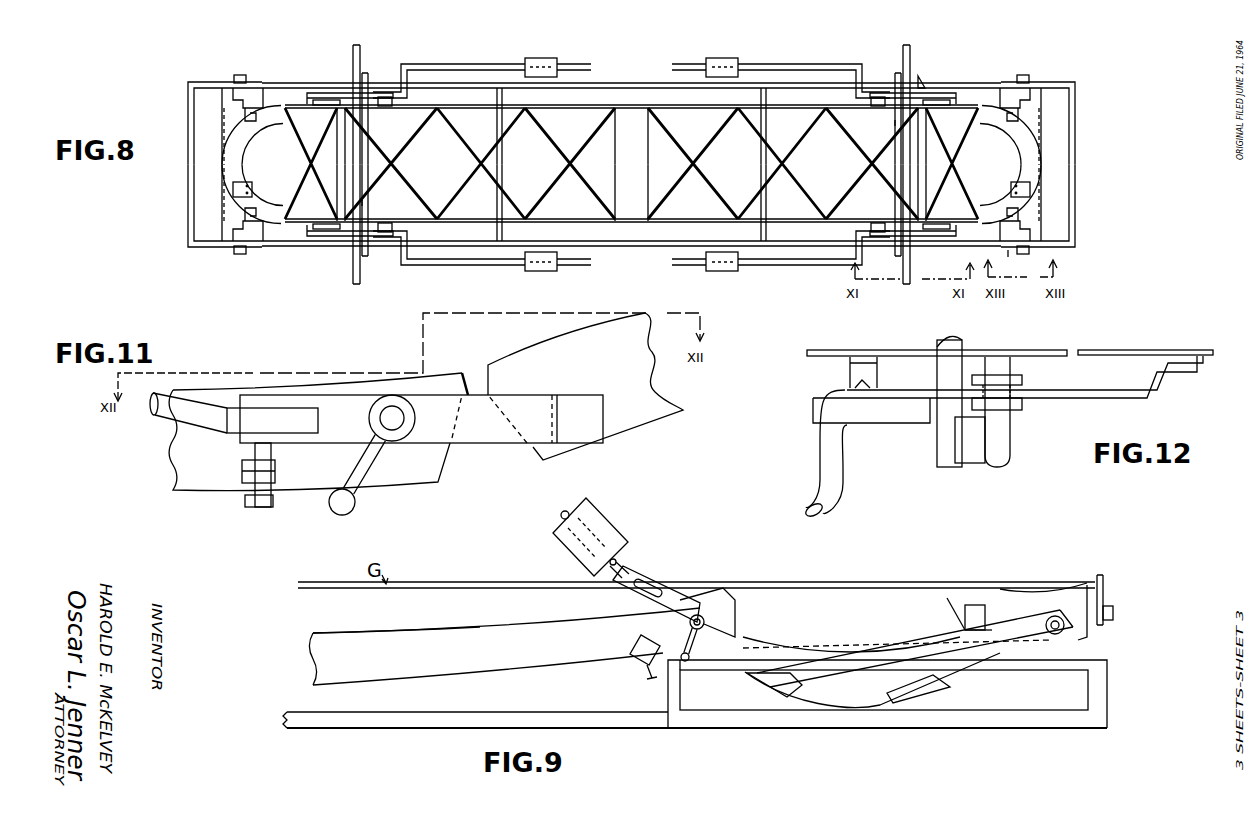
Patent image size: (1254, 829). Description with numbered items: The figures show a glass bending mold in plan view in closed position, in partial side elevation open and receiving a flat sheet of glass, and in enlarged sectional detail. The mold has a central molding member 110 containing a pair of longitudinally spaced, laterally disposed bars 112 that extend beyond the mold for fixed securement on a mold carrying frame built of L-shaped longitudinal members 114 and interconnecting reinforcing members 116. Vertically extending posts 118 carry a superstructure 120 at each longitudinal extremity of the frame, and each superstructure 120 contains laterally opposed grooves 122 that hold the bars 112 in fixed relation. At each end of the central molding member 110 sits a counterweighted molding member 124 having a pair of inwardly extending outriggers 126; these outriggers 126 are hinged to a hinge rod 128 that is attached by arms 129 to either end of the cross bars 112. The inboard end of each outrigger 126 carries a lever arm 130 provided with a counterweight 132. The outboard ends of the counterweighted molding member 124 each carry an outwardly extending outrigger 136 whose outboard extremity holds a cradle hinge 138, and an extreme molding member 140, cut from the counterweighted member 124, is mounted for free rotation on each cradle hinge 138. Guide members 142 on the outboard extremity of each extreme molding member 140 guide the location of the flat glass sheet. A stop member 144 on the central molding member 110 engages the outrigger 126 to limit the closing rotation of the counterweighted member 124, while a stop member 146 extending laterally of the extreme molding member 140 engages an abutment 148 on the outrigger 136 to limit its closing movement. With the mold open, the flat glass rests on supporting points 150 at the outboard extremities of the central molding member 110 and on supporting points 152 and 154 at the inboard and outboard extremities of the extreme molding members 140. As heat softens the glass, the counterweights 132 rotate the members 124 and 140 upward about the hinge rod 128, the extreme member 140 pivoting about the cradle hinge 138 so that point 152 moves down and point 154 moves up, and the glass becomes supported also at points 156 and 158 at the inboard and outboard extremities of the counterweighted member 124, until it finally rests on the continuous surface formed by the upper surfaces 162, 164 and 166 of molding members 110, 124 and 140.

In FIG. 8, the central molding member 110 is at (777, 100).
In FIG. 9, the central molding member 110 is at (504, 646).
In FIG. 8, the bars 112 is at (368, 203).
In FIG. 11, the bars 112 is at (355, 502).
In FIG. 12, the bars 112 is at (940, 466).
In FIG. 9, the bars 112 is at (692, 673).
In FIG. 8, the L-shaped longitudinal members 114 is at (447, 83).
In FIG. 8, the reinforcing members 116 is at (194, 193).
In FIG. 9, the vertically extending posts 118 is at (668, 698).
In FIG. 9, the superstructure 120 is at (1040, 663).
In FIG. 8, the laterally opposed grooves 122 is at (923, 77).
In FIG. 9, the laterally opposed grooves 122 is at (758, 653).
In FIG. 8, the counterweighted molding member 124 is at (315, 108).
In FIG. 11, the counterweighted molding member 124 is at (168, 415).
In FIG. 12, the counterweighted molding member 124 is at (824, 357).
In FIG. 9, the counterweighted molding member 124 is at (872, 680).
In FIG. 8, the outriggers 126 is at (323, 93).
In FIG. 11, the outriggers 126 is at (421, 419).
In FIG. 12, the outriggers 126 is at (1105, 393).
In FIG. 9, the outriggers 126 is at (630, 592).
In FIG. 8, the hinge rod 128 is at (347, 97).
In FIG. 11, the hinge rod 128 is at (393, 418).
In FIG. 12, the hinge rod 128 is at (1010, 433).
In FIG. 9, the hinge rod 128 is at (705, 620).
In FIG. 11, the arms 129 is at (370, 460).
In FIG. 9, the arms 129 is at (688, 640).
In FIG. 8, the lever arm 130 is at (478, 64).
In FIG. 9, the lever arm 130 is at (627, 568).
In FIG. 8, the counterweight 132 is at (591, 66).
In FIG. 9, the counterweight 132 is at (613, 530).
In FIG. 8, the outrigger 136 is at (263, 253).
In FIG. 8, the cradle hinge 138 is at (233, 257).
In FIG. 9, the cradle hinge 138 is at (1082, 638).
In FIG. 8, the extreme molding member 140 is at (230, 145).
In FIG. 11, the extreme molding member 140 is at (426, 402).
In FIG. 12, the extreme molding member 140 is at (1205, 349).
In FIG. 9, the extreme molding member 140 is at (1020, 597).
In FIG. 8, the guide members 142 is at (233, 185).
In FIG. 9, the guide members 142 is at (1103, 587).
In FIG. 8, the stop member 144 is at (390, 107).
In FIG. 11, the stop member 144 is at (252, 455).
In FIG. 12, the stop member 144 is at (868, 392).
In FIG. 9, the stop member 144 is at (633, 650).
In FIG. 8, the stop member 146 is at (247, 220).
In FIG. 9, the stop member 146 is at (978, 606).
In FIG. 8, the abutment 148 is at (1010, 263).
In FIG. 9, the abutment 148 is at (963, 677).
In FIG. 9, the supporting points 150 is at (725, 588).
In FIG. 9, the supporting points 152 is at (947, 598).
In FIG. 9, the supporting points 154 is at (1087, 585).
In FIG. 9, the supporting points 156 is at (747, 645).
In FIG. 9, the supporting points 158 is at (947, 657).
In FIG. 9, the upper surface 162 is at (323, 633).
In FIG. 9, the upper surface 164 is at (847, 653).
In FIG. 9, the upper surface 166 is at (1040, 588).